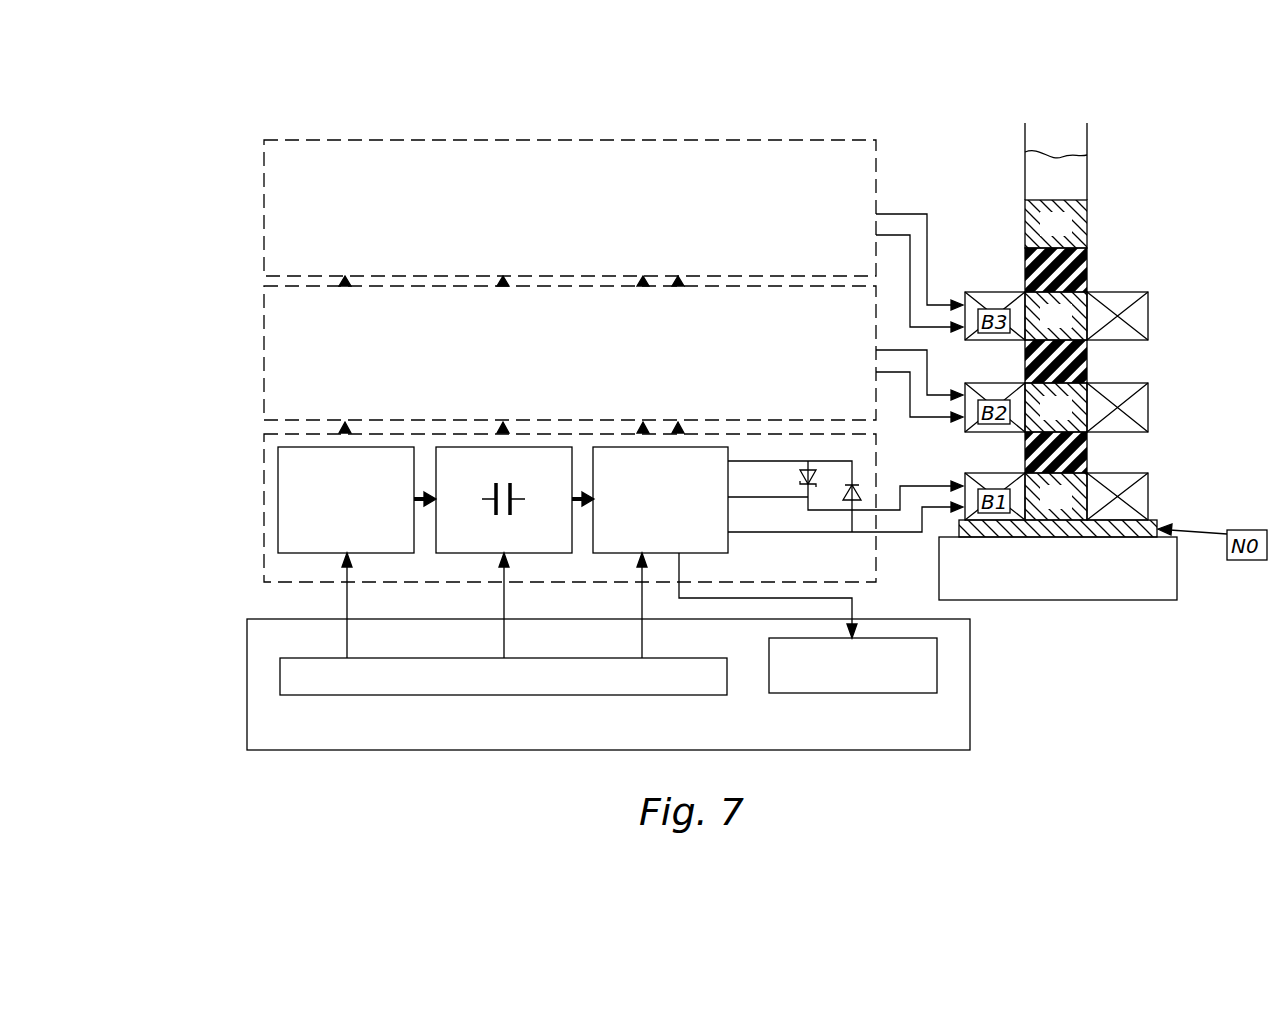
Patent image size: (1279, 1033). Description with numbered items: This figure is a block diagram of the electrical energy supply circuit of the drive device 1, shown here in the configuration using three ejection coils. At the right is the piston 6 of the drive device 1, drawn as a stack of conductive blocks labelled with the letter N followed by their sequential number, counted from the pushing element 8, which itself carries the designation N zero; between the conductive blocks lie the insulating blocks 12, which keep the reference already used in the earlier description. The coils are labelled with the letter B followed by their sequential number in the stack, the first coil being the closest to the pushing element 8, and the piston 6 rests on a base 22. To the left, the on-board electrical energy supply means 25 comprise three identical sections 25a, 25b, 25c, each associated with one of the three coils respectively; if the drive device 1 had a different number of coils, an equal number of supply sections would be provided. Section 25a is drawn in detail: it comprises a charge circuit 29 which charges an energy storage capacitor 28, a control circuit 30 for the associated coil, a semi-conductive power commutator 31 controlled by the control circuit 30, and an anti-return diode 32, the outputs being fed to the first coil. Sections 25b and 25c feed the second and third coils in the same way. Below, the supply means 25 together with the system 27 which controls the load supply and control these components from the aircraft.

The drive device 1 is at (1172, 130).
The piston 6 is at (1052, 135).
The pushing element 8 is at (1150, 522).
The insulating blocks 12 is at (1087, 260).
The support base 22 is at (1145, 578).
The electrical energy supply means 25 is at (539, 445).
The first supply section 25a is at (264, 505).
The second supply section 25b is at (264, 350).
The third supply section 25c is at (264, 208).
The load control system 27 is at (850, 680).
The energy storage capacitor 28 is at (457, 543).
The charge circuit 29 is at (308, 543).
The control circuit 30 is at (617, 543).
The semi-conductive power commutator 31 is at (808, 468).
The anti-return diode 32 is at (860, 492).